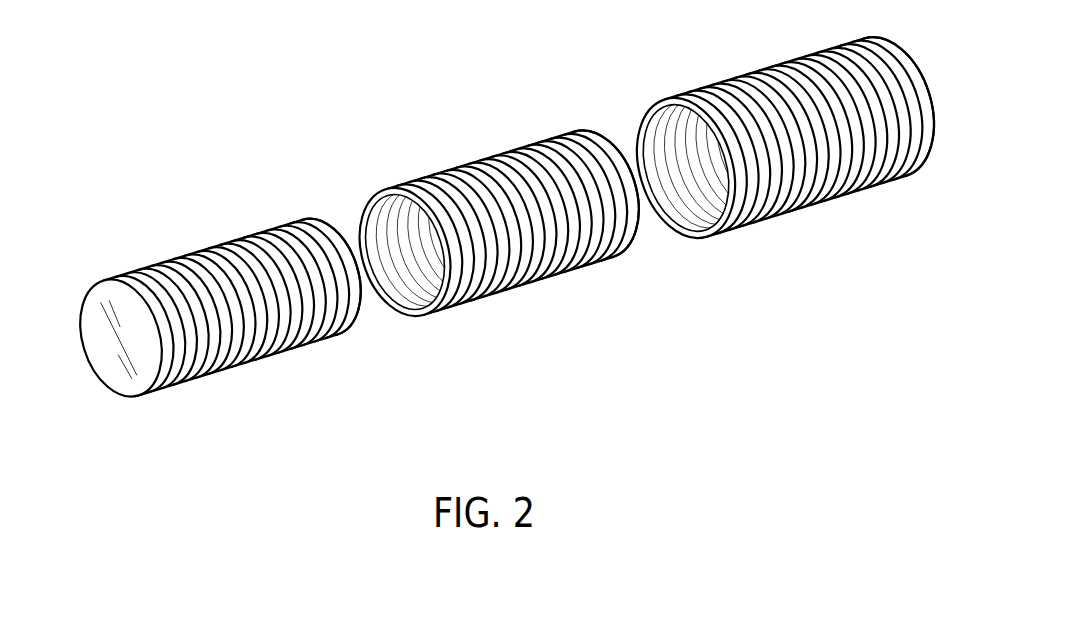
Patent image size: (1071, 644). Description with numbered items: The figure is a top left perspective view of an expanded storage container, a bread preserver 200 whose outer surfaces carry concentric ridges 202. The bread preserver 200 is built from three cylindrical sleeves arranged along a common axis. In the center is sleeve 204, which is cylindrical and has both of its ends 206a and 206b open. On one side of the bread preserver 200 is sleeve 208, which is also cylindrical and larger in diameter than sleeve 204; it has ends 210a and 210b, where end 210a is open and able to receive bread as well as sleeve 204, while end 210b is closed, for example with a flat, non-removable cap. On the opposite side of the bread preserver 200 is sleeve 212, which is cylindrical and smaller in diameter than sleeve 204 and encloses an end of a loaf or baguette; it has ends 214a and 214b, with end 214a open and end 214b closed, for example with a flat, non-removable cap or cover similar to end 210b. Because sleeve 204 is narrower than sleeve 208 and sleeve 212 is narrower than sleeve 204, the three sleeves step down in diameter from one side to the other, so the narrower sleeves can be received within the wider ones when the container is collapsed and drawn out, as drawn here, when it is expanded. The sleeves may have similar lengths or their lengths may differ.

The bread preserver 200 is at (557, 302).
The concentric ridges 202 is at (224, 242).
The sleeve 204 is at (513, 216).
The end 206a is at (378, 192).
The end 206b is at (641, 236).
The sleeve 208 is at (805, 125).
The end 210a is at (662, 98).
The end 210b is at (933, 97).
The sleeve 212 is at (218, 306).
The end 214a is at (354, 315).
The end 214b is at (103, 282).